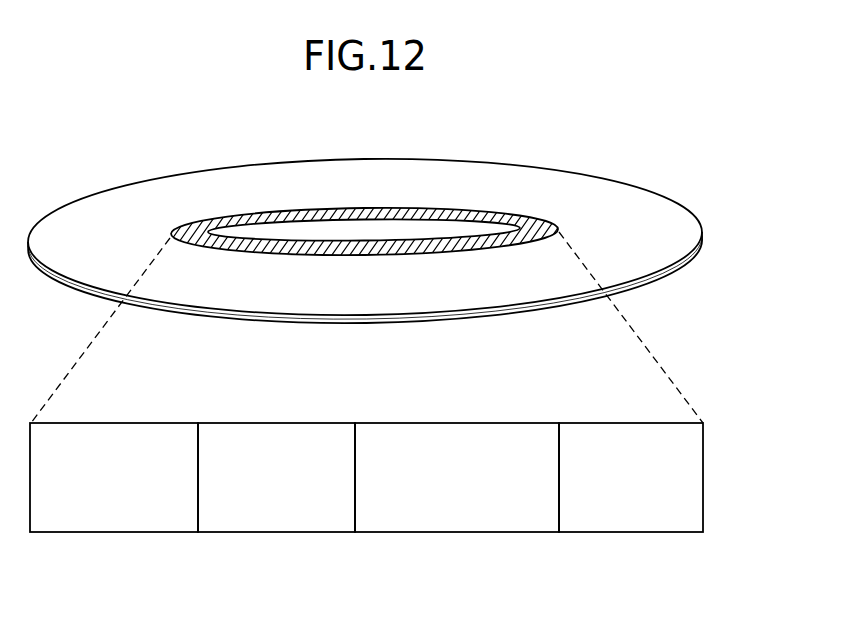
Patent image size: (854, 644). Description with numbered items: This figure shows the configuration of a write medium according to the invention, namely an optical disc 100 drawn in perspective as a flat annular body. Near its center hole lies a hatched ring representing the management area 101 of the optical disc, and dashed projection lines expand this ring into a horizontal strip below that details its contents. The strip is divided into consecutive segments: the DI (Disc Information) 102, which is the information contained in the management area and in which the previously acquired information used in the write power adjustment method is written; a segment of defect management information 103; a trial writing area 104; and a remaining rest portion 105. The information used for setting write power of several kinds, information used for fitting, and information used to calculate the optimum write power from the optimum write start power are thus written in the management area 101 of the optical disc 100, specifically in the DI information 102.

The optical disc 100 is at (221, 167).
The management area 101 is at (449, 208).
The DI (Disc Information) 102 is at (117, 423).
The defect management information area 103 is at (278, 423).
The trial writing area 104 is at (457, 423).
The rest area 105 is at (613, 423).